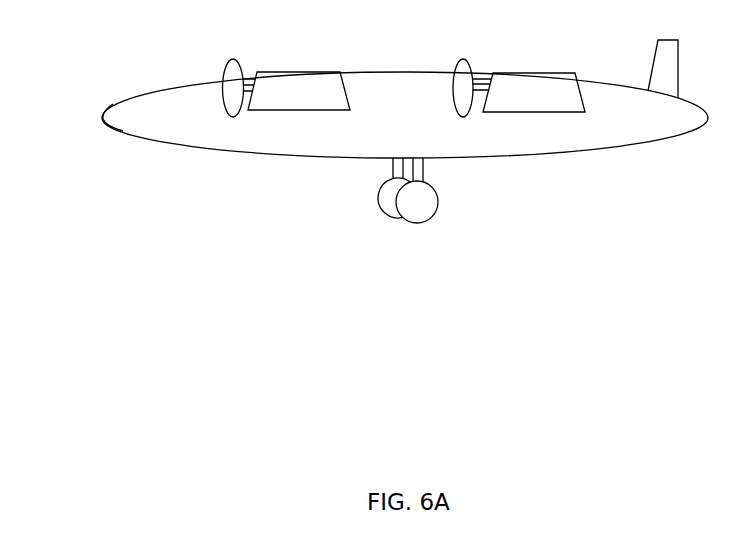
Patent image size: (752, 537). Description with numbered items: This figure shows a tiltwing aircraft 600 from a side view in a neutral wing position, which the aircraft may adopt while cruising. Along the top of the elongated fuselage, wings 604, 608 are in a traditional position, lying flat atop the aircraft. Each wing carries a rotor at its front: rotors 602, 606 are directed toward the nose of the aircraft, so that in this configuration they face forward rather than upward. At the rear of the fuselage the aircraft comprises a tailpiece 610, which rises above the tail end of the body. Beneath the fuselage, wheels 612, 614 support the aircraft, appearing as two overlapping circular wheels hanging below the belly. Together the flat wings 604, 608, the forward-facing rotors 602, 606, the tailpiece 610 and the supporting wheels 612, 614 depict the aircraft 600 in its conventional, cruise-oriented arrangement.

The aircraft 600 is at (104, 118).
The rotor 602 is at (225, 79).
The wing 604 is at (300, 72).
The rotor 606 is at (454, 76).
The wing 608 is at (517, 73).
The tailpiece 610 is at (654, 62).
The wheel 612 is at (379, 201).
The wheel 614 is at (437, 212).